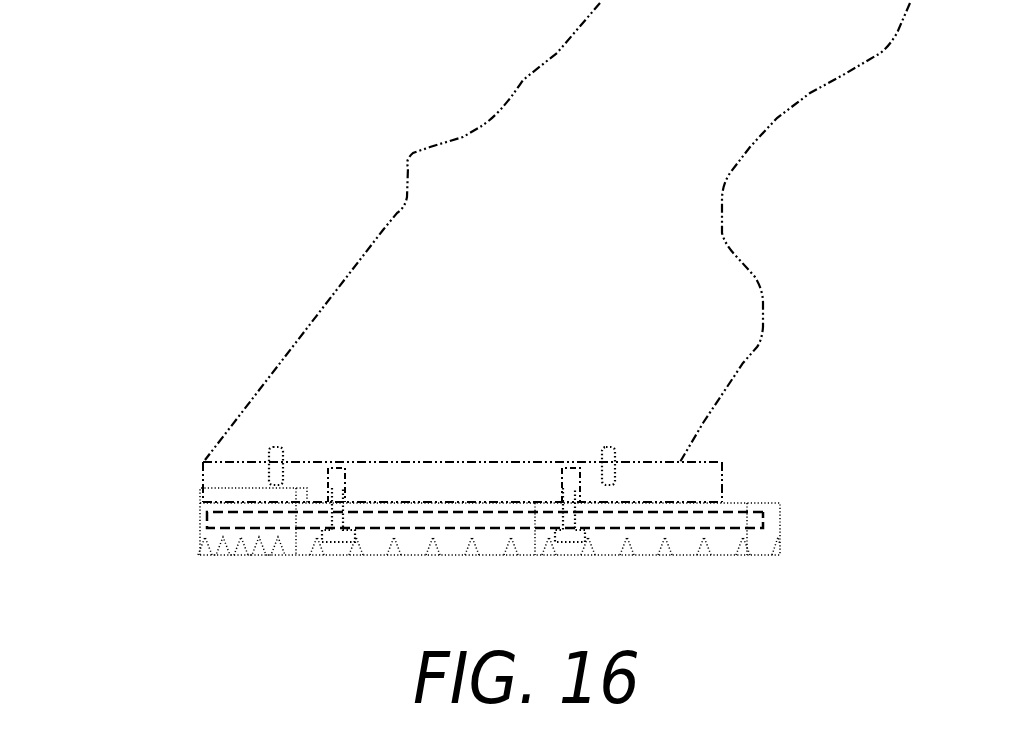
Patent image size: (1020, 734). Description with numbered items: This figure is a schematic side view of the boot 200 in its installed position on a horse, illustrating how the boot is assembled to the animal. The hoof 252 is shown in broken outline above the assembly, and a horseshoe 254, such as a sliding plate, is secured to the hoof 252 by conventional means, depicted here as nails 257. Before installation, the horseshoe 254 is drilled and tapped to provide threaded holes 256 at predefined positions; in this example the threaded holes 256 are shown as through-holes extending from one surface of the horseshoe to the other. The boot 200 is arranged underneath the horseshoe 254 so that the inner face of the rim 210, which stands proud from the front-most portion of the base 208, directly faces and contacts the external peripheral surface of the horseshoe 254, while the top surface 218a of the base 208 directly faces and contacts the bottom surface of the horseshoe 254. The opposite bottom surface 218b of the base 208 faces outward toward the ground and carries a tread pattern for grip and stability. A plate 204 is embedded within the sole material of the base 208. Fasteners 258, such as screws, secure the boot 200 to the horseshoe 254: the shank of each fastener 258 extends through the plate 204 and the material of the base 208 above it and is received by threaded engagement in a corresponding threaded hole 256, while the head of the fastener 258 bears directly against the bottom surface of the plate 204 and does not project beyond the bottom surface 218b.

The boot 200 is at (165, 526).
The plate 204 is at (765, 517).
The base 208 is at (202, 537).
The rim 210 is at (200, 502).
The top surface 218a is at (772, 503).
The bottom surface 218b is at (772, 555).
The hoof 252 is at (343, 280).
The horseshoe 254 is at (713, 462).
The threaded holes 256 is at (347, 470).
The nails 257 is at (282, 448).
The fasteners 258 is at (333, 543).